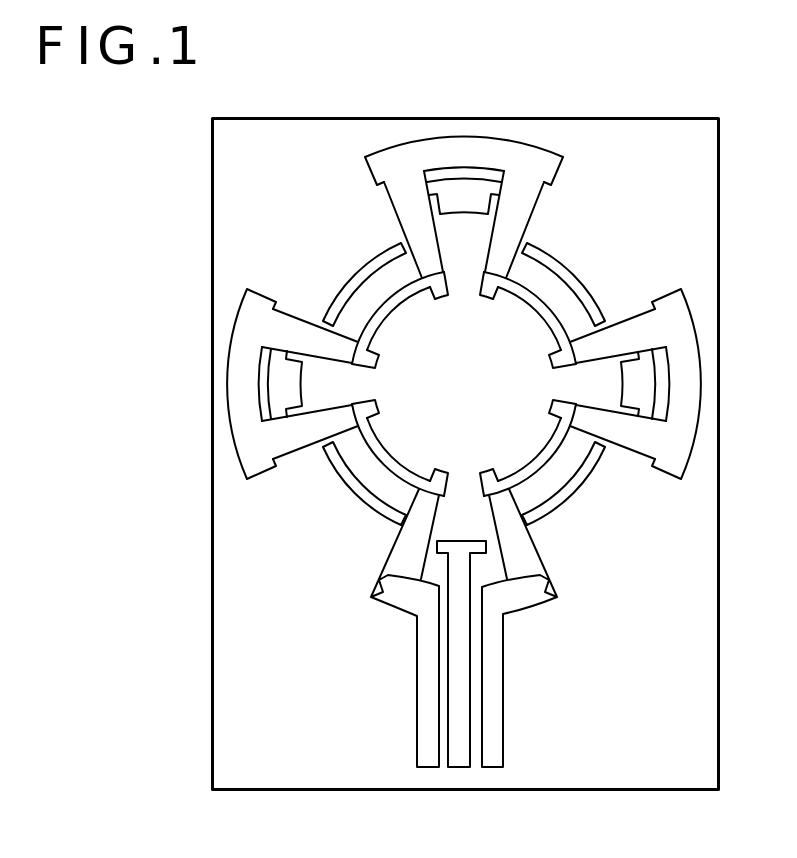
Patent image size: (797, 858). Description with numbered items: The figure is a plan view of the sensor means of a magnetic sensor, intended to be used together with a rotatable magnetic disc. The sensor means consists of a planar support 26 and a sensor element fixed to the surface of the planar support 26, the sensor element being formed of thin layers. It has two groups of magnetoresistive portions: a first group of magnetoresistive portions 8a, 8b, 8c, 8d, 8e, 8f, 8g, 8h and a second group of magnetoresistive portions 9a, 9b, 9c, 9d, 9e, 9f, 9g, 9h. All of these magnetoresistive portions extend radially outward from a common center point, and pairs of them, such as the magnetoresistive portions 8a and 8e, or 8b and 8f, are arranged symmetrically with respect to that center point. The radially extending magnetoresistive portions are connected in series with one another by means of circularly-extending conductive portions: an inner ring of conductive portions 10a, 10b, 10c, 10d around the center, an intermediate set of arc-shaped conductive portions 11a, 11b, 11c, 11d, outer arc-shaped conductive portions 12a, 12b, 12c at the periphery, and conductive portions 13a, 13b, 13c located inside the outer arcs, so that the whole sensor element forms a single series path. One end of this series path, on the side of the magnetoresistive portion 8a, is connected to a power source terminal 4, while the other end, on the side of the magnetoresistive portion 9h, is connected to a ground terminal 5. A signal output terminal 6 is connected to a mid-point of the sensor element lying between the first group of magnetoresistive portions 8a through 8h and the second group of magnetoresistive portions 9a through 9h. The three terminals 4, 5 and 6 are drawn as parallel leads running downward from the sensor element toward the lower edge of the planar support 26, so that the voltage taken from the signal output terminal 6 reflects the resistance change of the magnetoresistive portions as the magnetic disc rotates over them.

The power source terminal 4 is at (430, 746).
The ground terminal 5 is at (460, 746).
The signal output terminal 6 is at (492, 746).
The magnetoresistive portion 8a is at (386, 563).
The magnetoresistive portion 8b is at (283, 457).
The magnetoresistive portion 8c is at (298, 317).
The magnetoresistive portion 8d is at (390, 200).
The magnetoresistive portion 8e is at (540, 197).
The magnetoresistive portion 8f is at (641, 307).
The magnetoresistive portion 8g is at (642, 462).
The magnetoresistive portion 8h is at (541, 562).
The magnetoresistive portion 9a is at (492, 515).
The magnetoresistive portion 9b is at (590, 398).
The magnetoresistive portion 9c is at (556, 353).
The magnetoresistive portion 9d is at (488, 264).
The magnetoresistive portion 9e is at (443, 292).
The magnetoresistive portion 9f is at (368, 355).
The magnetoresistive portion 9g is at (370, 406).
The magnetoresistive portion 9h is at (447, 474).
The conductive portion 10a is at (405, 445).
The conductive portion 10b is at (518, 443).
The conductive portion 10c is at (528, 308).
The conductive portion 10d is at (398, 308).
The conductive portion 11a is at (362, 480).
The conductive portion 11b is at (562, 480).
The conductive portion 11c is at (570, 278).
The conductive portion 11d is at (384, 268).
The conductive portion 12a is at (690, 365).
The conductive portion 12b is at (469, 150).
The conductive portion 12c is at (246, 300).
The conductive portion 13a is at (626, 377).
The conductive portion 13b is at (464, 197).
The conductive portion 13c is at (288, 381).
The planar support 26 is at (650, 748).